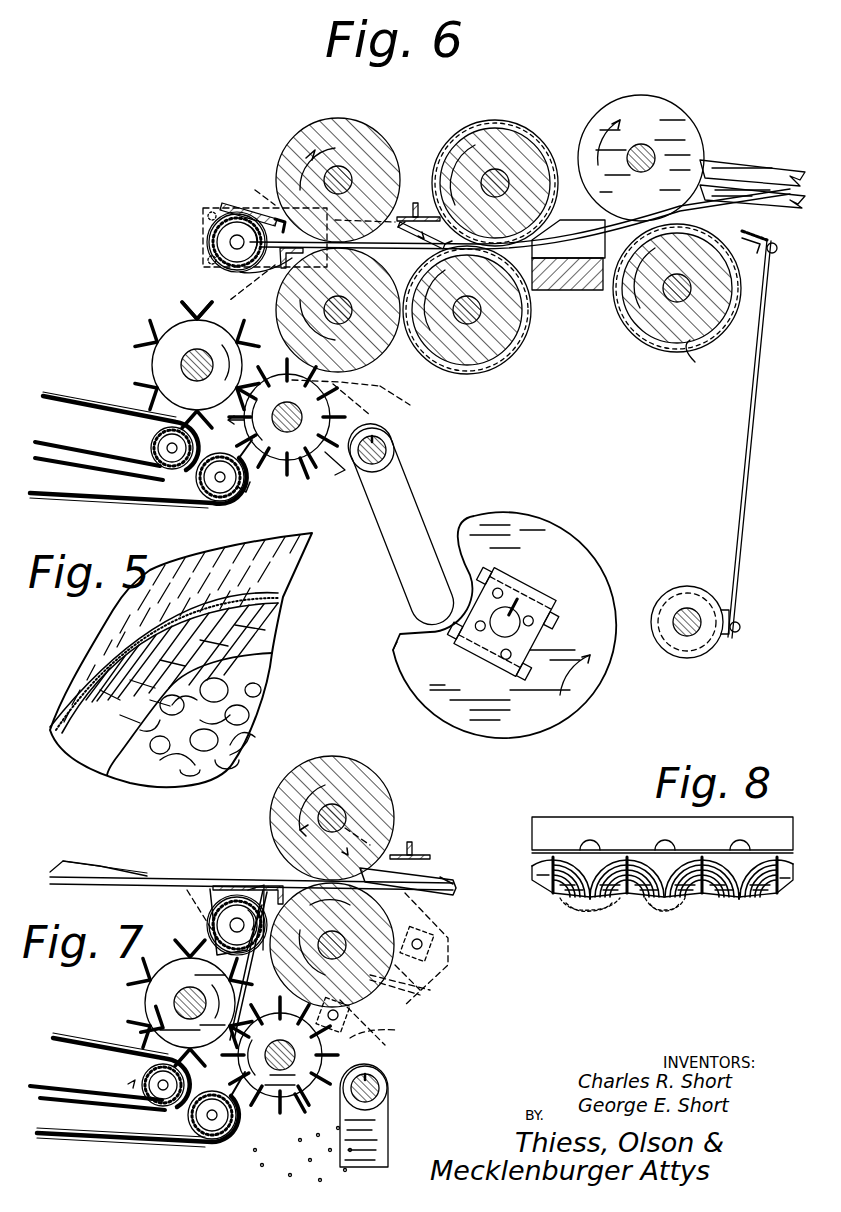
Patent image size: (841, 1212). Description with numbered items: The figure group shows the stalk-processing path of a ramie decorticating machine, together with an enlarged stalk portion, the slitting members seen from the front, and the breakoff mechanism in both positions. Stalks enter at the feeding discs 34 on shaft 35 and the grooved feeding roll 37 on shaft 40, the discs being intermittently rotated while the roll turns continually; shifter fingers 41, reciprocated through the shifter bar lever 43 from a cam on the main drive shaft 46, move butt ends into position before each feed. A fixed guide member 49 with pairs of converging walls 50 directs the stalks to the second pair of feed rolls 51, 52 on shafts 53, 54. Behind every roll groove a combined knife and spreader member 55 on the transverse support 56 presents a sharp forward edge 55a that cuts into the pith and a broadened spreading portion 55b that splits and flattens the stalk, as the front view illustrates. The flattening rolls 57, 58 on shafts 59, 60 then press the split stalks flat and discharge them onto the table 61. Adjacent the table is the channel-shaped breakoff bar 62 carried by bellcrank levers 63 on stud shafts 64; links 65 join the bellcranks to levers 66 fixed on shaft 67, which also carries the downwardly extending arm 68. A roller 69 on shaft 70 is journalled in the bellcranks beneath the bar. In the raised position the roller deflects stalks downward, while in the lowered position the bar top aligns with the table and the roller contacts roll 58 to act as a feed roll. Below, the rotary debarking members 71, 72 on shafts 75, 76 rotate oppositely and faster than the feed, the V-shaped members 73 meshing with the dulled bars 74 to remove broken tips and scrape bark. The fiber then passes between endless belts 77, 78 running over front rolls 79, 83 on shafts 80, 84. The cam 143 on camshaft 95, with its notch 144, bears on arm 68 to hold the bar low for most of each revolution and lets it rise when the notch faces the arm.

In FIG. 6, the feeding discs 34 is at (665, 120).
In FIG. 6, the shaft 35 is at (641, 144).
In FIG. 6, the feeding roll 37 is at (695, 362).
In FIG. 6, the shaft 40 is at (668, 291).
In FIG. 6, the shifter fingers 41 is at (700, 195).
In FIG. 6, the shifter bar lever 43 is at (748, 431).
In FIG. 6, the main drive shaft 46 is at (690, 610).
In FIG. 6, the fixed guide member 49 is at (586, 290).
In FIG. 6, the converging walls 50 is at (576, 226).
In FIG. 6, the upper feed roll 51 is at (490, 150).
In FIG. 6, the lower feed roll 52 is at (470, 325).
In FIG. 6, the shaft 53 is at (503, 173).
In FIG. 6, the shaft 54 is at (458, 300).
In FIG. 6, the combined knife and spreader members 55 is at (424, 238).
In FIG. 8, the combined knife and spreader members 55 is at (690, 900).
In FIG. 6, the sharp forward edge 55a is at (450, 241).
In FIG. 7, the sharp forward edge 55a is at (454, 876).
In FIG. 8, the sharp forward edge 55a is at (742, 900).
In FIG. 6, the spreading portion 55b is at (405, 222).
In FIG. 7, the spreading portion 55b is at (420, 860).
In FIG. 8, the spreading portion 55b is at (635, 900).
In FIG. 6, the transverse support 56 is at (415, 202).
In FIG. 7, the transverse support 56 is at (411, 842).
In FIG. 8, the transverse support 56 is at (590, 818).
In FIG. 6, the flattening roll 57 is at (355, 136).
In FIG. 7, the flattening roll 57 is at (360, 778).
In FIG. 6, the flattening roll 58 is at (290, 312).
In FIG. 7, the flattening roll 58 is at (398, 972).
In FIG. 6, the shaft 59 is at (345, 168).
In FIG. 7, the shaft 59 is at (326, 813).
In FIG. 6, the shaft 60 is at (330, 300).
In FIG. 7, the shaft 60 is at (332, 945).
In FIG. 6, the table 61 is at (262, 270).
In FIG. 7, the table 61 is at (262, 886).
In FIG. 6, the breakoff bar 62 is at (228, 204).
In FIG. 7, the breakoff bar 62 is at (240, 887).
In FIG. 6, the bellcrank levers 63 is at (265, 219).
In FIG. 7, the bellcrank levers 63 is at (195, 887).
In FIG. 6, the stud shafts 64 is at (356, 216).
In FIG. 7, the stud shafts 64 is at (359, 835).
In FIG. 6, the links 65 is at (365, 385).
In FIG. 7, the links 65 is at (398, 992).
In FIG. 6, the levers 66 is at (340, 472).
In FIG. 7, the levers 66 is at (366, 1021).
In FIG. 6, the shaft 67 is at (386, 446).
In FIG. 7, the shaft 67 is at (383, 1086).
In FIG. 6, the downwardly extending arm 68 is at (405, 468).
In FIG. 7, the downwardly extending arm 68 is at (392, 1121).
In FIG. 6, the roller 69 is at (215, 235).
In FIG. 7, the roller 69 is at (212, 922).
In FIG. 6, the shaft 70 is at (230, 242).
In FIG. 7, the shaft 70 is at (230, 925).
In FIG. 6, the rotary debarking member 71 is at (155, 365).
In FIG. 7, the rotary debarking member 71 is at (170, 975).
In FIG. 6, the rotary debarking member 72 is at (304, 476).
In FIG. 7, the rotary debarking member 72 is at (310, 1098).
In FIG. 6, the V-shaped members 73 is at (193, 318).
In FIG. 7, the V-shaped members 73 is at (140, 985).
In FIG. 6, the bars 74 is at (247, 492).
In FIG. 7, the bars 74 is at (276, 1125).
In FIG. 6, the shaft 75 is at (182, 368).
In FIG. 7, the shaft 75 is at (175, 1001).
In FIG. 6, the shaft 76 is at (286, 417).
In FIG. 7, the shaft 76 is at (280, 1055).
In FIG. 6, the lower endless belt 77 is at (100, 498).
In FIG. 7, the lower endless belt 77 is at (52, 1138).
In FIG. 6, the upper endless belt 78 is at (128, 410).
In FIG. 7, the upper endless belt 78 is at (65, 1036).
In FIG. 6, the front roll 79 is at (170, 470).
In FIG. 7, the front roll 79 is at (214, 1141).
In FIG. 6, the shaft 80 is at (214, 502).
In FIG. 7, the shaft 80 is at (203, 1145).
In FIG. 6, the front roll 83 is at (148, 444).
In FIG. 7, the front roll 83 is at (140, 1075).
In FIG. 6, the shaft 84 is at (150, 456).
In FIG. 7, the shaft 84 is at (138, 1088).
In FIG. 6, the camshaft 95 is at (520, 620).
In FIG. 6, the cam 143 is at (580, 552).
In FIG. 6, the notch 144 is at (400, 630).